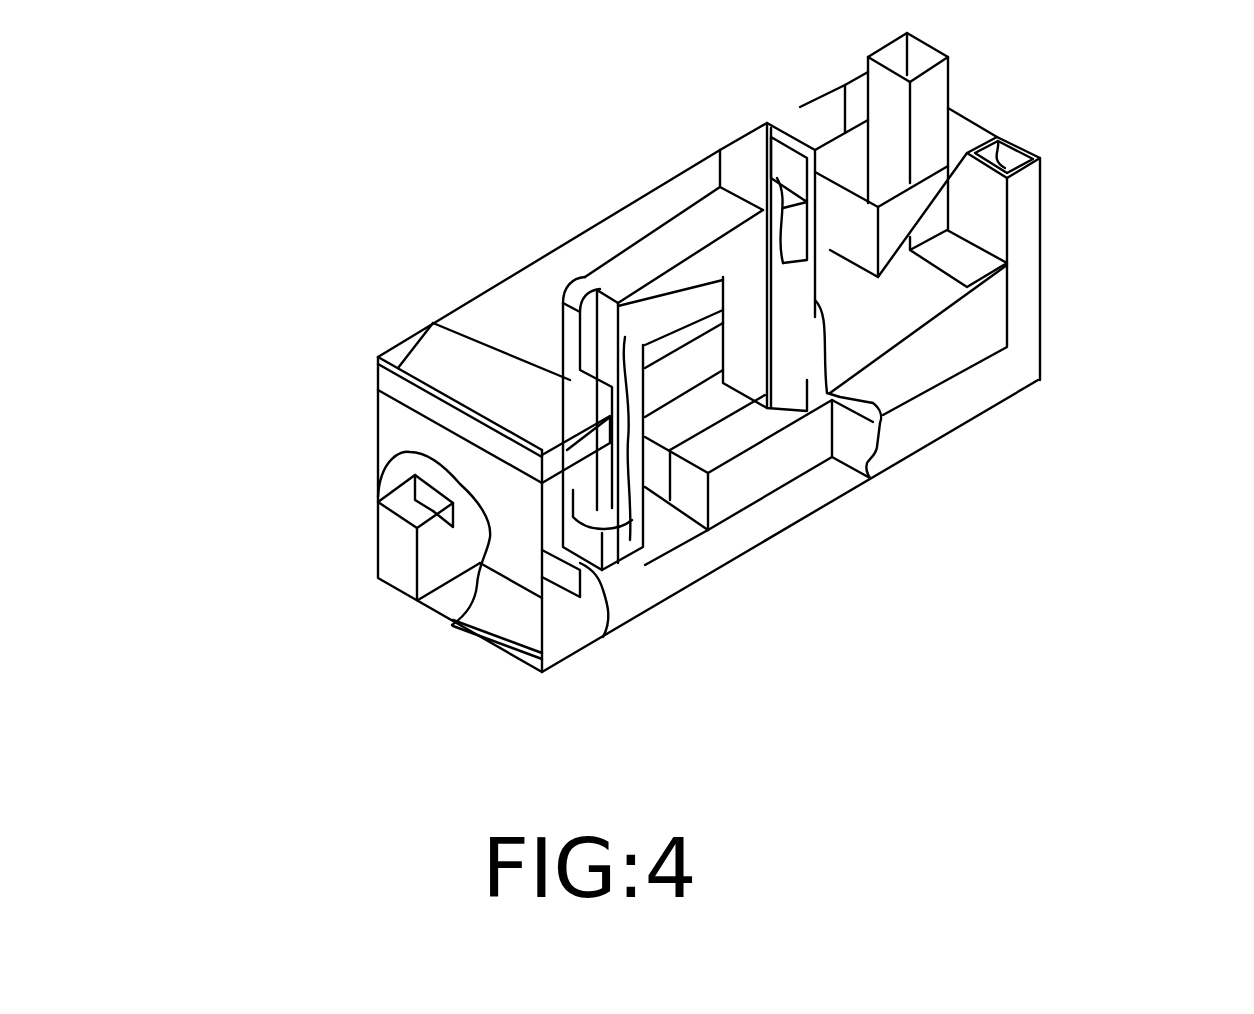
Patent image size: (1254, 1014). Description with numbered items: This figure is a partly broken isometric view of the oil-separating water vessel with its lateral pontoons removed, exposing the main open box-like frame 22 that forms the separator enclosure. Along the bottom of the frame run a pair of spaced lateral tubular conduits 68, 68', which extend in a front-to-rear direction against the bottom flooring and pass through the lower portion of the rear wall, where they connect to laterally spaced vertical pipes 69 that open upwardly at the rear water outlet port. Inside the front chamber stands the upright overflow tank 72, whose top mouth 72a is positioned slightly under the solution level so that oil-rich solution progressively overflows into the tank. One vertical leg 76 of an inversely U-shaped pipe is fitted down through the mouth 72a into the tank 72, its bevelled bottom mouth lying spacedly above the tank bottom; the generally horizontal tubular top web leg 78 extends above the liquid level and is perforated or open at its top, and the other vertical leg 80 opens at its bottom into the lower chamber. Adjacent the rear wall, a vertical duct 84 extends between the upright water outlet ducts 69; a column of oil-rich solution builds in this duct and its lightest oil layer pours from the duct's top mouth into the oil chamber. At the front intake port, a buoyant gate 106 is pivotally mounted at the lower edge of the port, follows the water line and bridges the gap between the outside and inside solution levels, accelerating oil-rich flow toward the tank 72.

The main frame 22 is at (775, 540).
The lateral tubular conduit 68 is at (605, 515).
The lateral tubular conduit 68' is at (265, 537).
The vertical pipe 69 is at (1063, 307).
The overflow tank 72 is at (626, 563).
The top mouth 72a is at (619, 338).
The vertical leg 76 is at (592, 302).
The top web leg 78 is at (659, 230).
The vertical leg 80 is at (787, 389).
The vertical duct 84 is at (980, 122).
The buoyant gate 106 is at (532, 408).